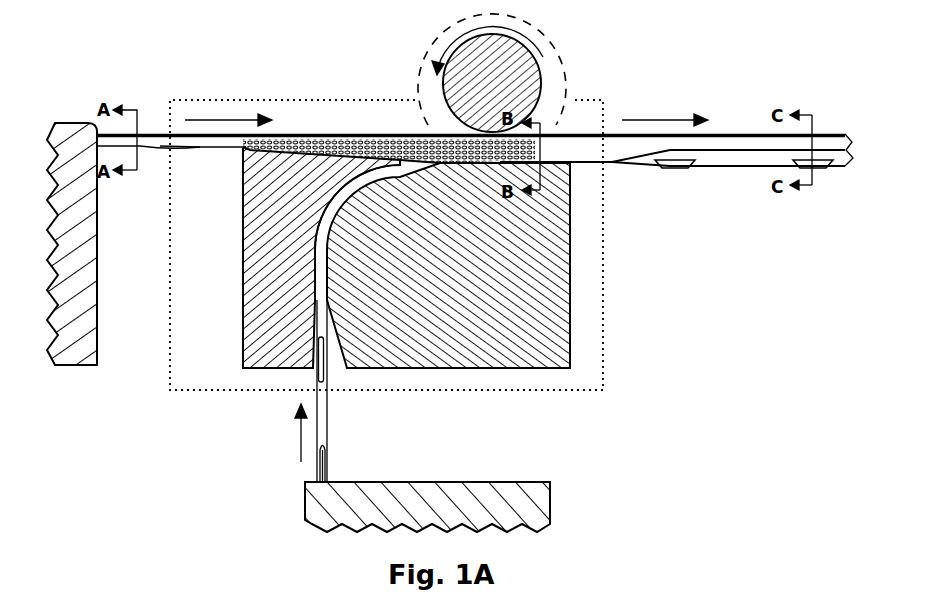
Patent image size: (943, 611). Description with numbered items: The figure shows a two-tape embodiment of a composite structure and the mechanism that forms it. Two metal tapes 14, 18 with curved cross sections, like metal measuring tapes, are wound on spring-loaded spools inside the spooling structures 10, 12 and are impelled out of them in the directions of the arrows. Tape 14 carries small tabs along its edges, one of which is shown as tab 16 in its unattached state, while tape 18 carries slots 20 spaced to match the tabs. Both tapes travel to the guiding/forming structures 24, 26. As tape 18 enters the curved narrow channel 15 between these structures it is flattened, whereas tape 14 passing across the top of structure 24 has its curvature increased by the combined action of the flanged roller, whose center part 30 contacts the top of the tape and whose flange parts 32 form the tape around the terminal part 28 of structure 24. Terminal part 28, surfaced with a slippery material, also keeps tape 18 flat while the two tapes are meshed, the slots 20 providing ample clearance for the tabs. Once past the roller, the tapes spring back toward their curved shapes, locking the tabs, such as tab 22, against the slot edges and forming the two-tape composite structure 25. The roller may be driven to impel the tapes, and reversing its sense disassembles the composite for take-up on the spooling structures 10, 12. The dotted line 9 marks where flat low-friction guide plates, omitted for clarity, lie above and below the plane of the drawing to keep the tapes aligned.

The dotted line 9 is at (170, 392).
The spooling structure 10 is at (90, 295).
The spooling structure 12 is at (305, 505).
The metal tape 14 is at (187, 148).
The curved narrow channel 15 is at (323, 243).
The tab 16 is at (136, 150).
The metal tape 18 is at (328, 421).
The slots 20 is at (328, 460).
The tab 22 is at (675, 168).
The guiding/forming structure 24 is at (243, 345).
The two-tape composite structure 25 is at (724, 150).
The guiding/forming structure 26 is at (517, 368).
The terminal part 28 is at (458, 134).
The roller center part 30 is at (447, 84).
The roller flange parts 32 is at (572, 84).